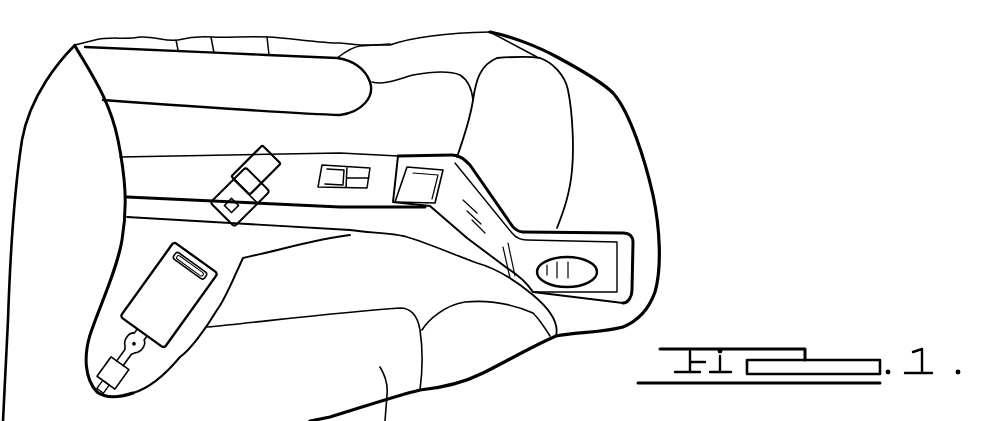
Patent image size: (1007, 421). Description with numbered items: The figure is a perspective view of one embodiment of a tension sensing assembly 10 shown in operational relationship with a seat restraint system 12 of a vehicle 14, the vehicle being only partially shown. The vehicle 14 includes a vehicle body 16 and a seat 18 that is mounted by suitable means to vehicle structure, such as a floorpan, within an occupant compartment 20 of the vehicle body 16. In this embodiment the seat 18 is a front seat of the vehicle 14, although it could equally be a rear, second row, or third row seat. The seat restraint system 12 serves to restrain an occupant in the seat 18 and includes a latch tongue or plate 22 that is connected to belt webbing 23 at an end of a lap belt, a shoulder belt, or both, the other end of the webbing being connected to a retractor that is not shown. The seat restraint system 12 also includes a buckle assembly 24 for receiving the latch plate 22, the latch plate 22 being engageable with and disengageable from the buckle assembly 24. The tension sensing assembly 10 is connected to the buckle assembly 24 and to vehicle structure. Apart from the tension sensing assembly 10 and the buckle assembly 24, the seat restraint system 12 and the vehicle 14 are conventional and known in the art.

The tension sensing assembly 10 is at (182, 345).
The seat restraint system 12 is at (185, 151).
The vehicle 14 is at (537, 52).
The vehicle body 16 is at (617, 92).
The seat 18 is at (416, 394).
The occupant compartment 20 is at (617, 163).
The latch tongue or plate 22 is at (222, 182).
The belt webbing 23 is at (261, 163).
The buckle assembly 24 is at (128, 302).